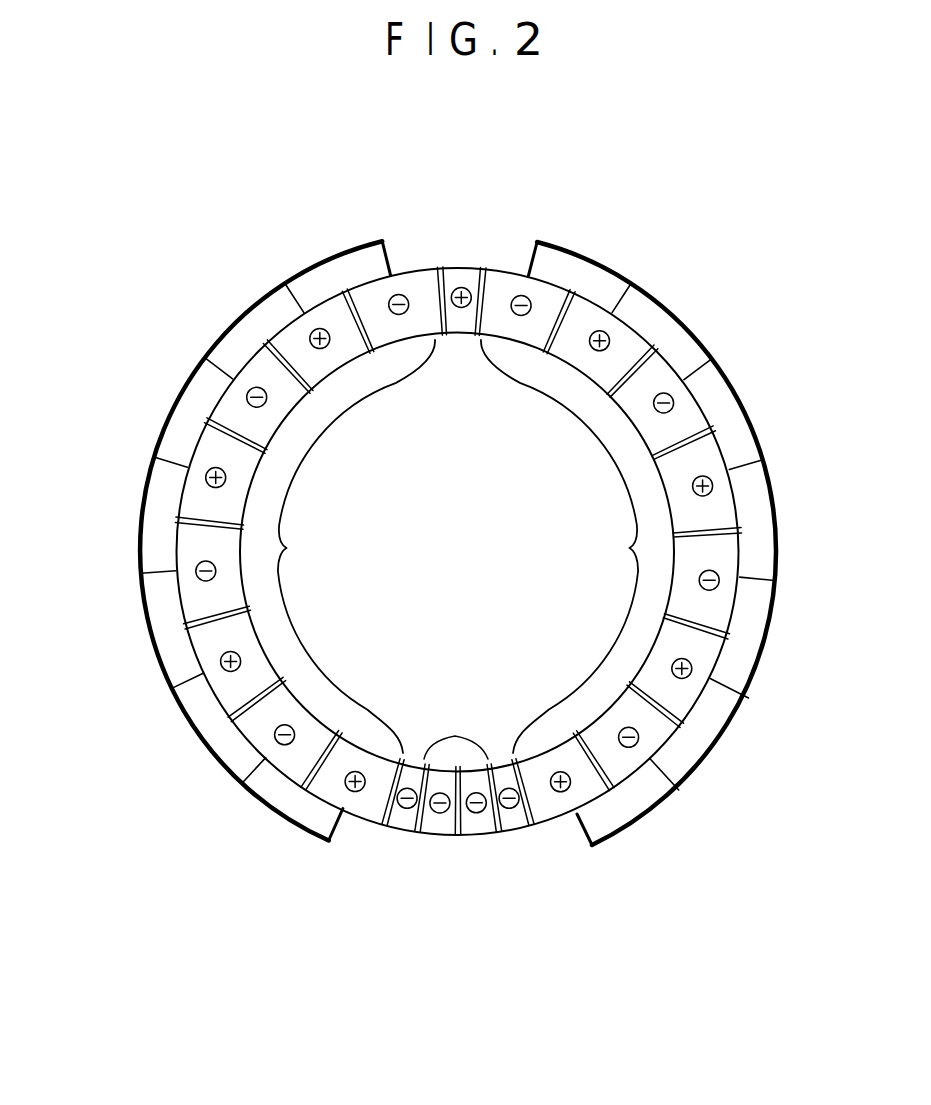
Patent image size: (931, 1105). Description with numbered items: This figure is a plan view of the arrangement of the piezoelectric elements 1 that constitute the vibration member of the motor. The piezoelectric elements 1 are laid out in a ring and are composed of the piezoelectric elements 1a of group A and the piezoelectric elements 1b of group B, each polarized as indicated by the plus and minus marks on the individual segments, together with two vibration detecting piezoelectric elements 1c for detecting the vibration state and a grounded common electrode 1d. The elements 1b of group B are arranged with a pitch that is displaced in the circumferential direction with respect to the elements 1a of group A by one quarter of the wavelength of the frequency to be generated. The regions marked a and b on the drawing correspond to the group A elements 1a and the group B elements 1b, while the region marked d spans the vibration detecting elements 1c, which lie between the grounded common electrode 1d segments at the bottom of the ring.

The piezoelectric elements 1 is at (412, 278).
The piezoelectric elements of group A 1a is at (761, 526).
The piezoelectric elements of group B 1b is at (147, 521).
The vibration detecting piezoelectric elements 1c is at (483, 836).
The grounded common electrode 1d is at (462, 276).
The pole region a is at (559, 546).
The pole region b is at (356, 546).
The region d is at (456, 732).